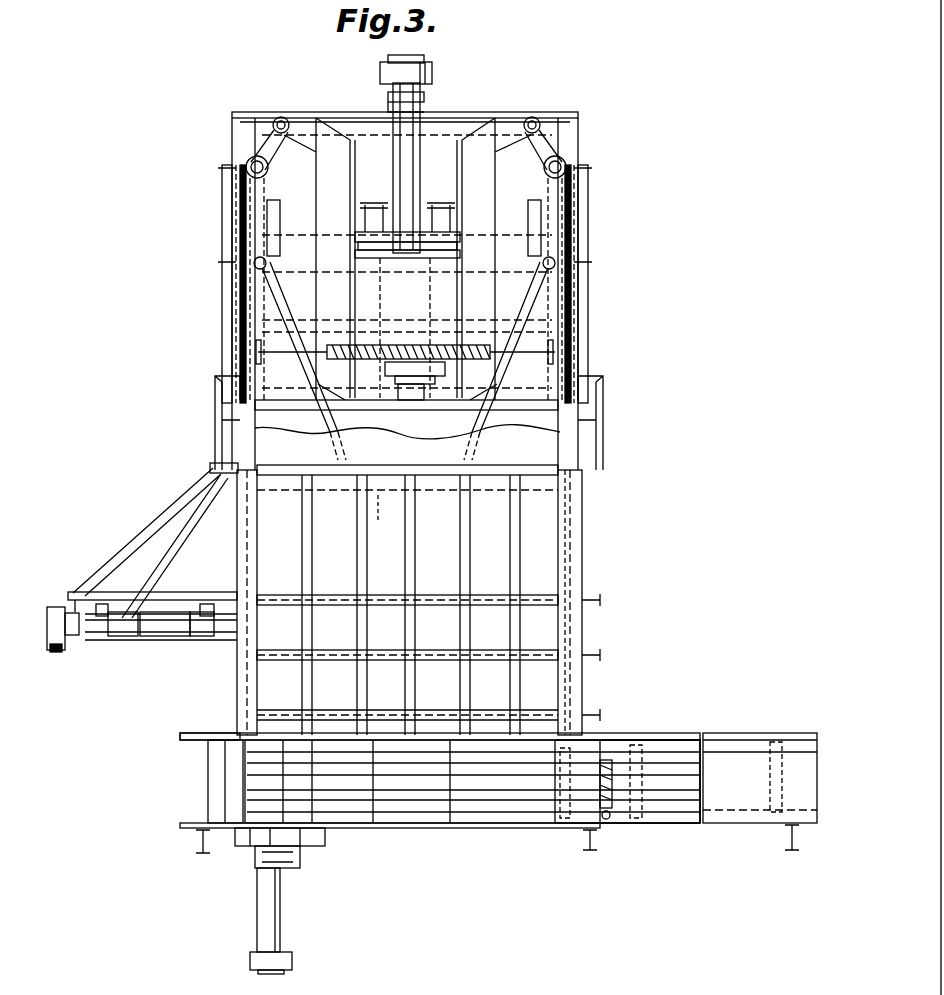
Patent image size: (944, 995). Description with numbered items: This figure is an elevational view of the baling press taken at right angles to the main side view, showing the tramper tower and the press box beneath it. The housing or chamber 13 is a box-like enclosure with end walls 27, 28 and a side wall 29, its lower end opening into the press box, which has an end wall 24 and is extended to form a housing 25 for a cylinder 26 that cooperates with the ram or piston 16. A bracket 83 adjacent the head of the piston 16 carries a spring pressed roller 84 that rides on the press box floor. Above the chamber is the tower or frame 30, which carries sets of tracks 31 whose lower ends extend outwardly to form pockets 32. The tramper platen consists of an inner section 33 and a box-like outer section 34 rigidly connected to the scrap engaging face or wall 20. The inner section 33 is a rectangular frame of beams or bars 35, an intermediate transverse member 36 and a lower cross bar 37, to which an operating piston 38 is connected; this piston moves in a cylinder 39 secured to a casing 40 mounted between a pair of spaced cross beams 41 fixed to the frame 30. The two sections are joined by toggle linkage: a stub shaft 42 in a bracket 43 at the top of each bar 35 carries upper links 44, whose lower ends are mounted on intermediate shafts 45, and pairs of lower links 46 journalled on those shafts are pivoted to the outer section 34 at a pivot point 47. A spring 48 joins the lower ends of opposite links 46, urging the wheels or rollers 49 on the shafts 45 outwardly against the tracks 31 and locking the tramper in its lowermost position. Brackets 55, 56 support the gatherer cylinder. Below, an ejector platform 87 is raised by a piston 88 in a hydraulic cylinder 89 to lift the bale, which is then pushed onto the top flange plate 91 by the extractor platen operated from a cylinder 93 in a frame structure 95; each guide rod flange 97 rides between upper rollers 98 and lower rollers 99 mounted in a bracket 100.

The housing or chamber 13 is at (592, 577).
The ram or piston 16 is at (595, 745).
The scrap engaging face or wall 20 is at (378, 516).
The end wall 24 is at (245, 788).
The housing 25 is at (728, 740).
The cylinder 26 is at (660, 760).
The end wall 27 is at (582, 540).
The end wall 28 is at (236, 551).
The side wall 29 is at (475, 528).
The tower or frame 30 is at (214, 272).
The tracks 31 is at (227, 195).
The pockets 32 is at (220, 410).
The inner section 33 is at (312, 310).
The outer section 34 is at (540, 232).
The beams or bars 35 is at (336, 160).
The intermediate transverse member 36 is at (370, 258).
The lower cross bar 37 is at (462, 428).
The operating piston 38 is at (396, 395).
The cylinder 39 is at (412, 150).
The casing 40 is at (420, 288).
The cross beams 41 is at (373, 203).
The stub shaft 42 is at (281, 117).
The bracket 43 is at (306, 128).
The upper links 44 is at (282, 150).
The intermediate shafts 45 is at (247, 163).
The lower links 46 is at (247, 222).
The pivot point 47 is at (256, 265).
The spring 48 is at (484, 345).
The wheels or rollers 49 is at (266, 175).
The bracket 55 is at (388, 375).
The bracket 56 is at (395, 98).
The bracket 83 is at (602, 808).
The spring pressed roller 84 is at (612, 820).
The ejector platform 87 is at (255, 840).
The piston 88 is at (262, 856).
The hydraulic cylinder 89 is at (262, 925).
The top flange plate 91 is at (205, 718).
The cylinder 93 is at (80, 650).
The frame structure 95 is at (186, 600).
The flange 97 is at (170, 640).
The upper rollers 98 is at (117, 604).
The lower rollers 99 is at (118, 636).
The bracket 100 is at (148, 636).